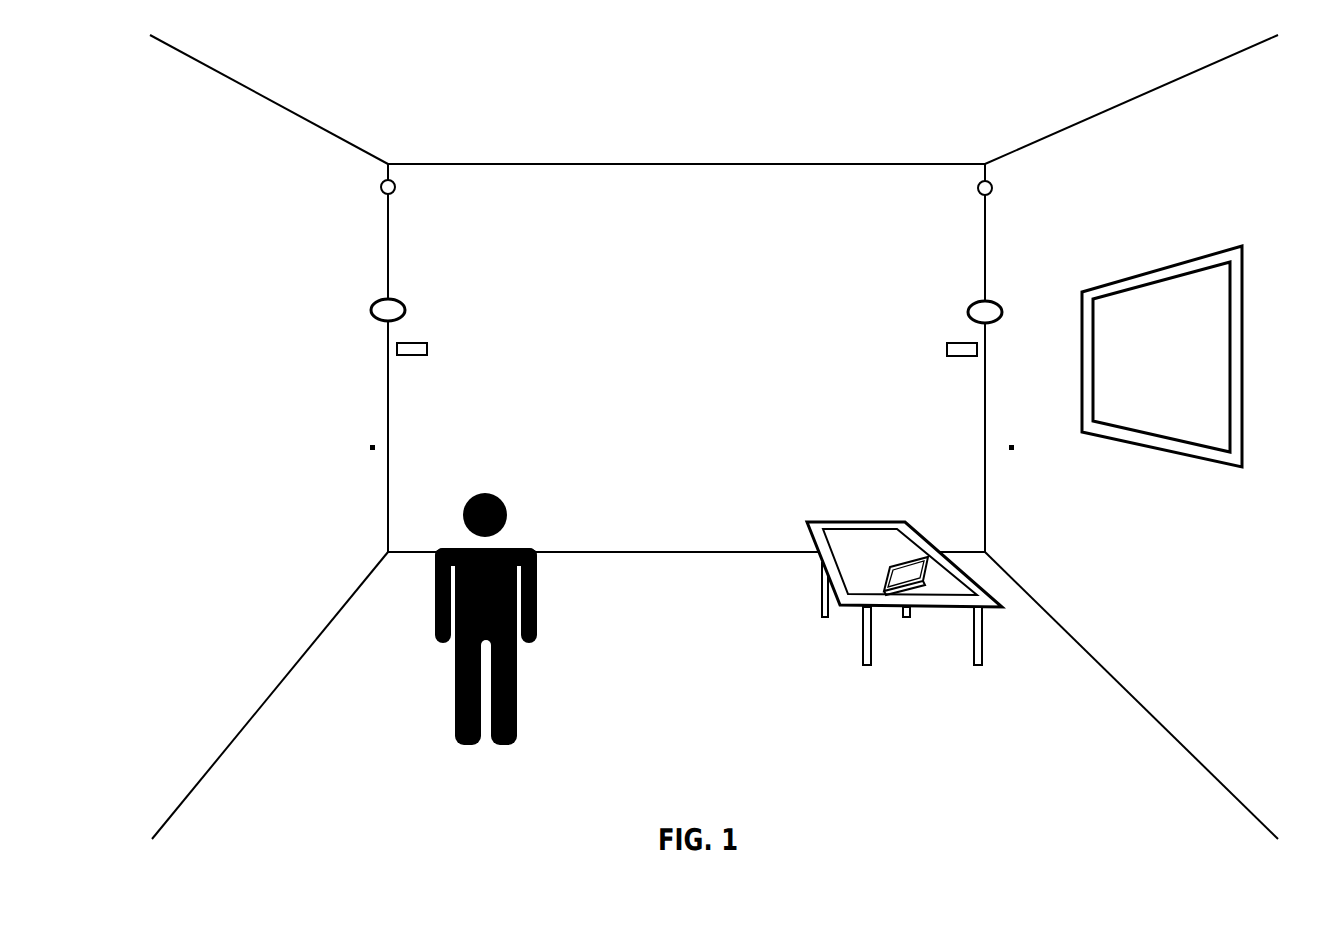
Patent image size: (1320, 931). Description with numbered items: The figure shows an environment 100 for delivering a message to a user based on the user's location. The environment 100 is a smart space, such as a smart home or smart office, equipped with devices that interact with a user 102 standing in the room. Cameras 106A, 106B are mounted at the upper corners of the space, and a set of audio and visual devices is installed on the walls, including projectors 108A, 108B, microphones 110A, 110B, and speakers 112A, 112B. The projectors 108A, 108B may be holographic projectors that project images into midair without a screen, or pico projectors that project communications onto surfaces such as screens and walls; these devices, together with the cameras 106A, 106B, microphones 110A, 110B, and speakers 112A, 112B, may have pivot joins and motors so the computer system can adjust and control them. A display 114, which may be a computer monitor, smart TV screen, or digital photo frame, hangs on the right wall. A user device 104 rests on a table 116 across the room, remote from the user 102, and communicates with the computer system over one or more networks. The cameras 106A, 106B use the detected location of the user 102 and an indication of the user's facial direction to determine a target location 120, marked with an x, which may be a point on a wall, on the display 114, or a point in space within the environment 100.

The environment 100 is at (404, 125).
The user 102 is at (496, 492).
The user device 104 is at (898, 565).
The camera 106A is at (394, 192).
The camera 106B is at (991, 193).
The projector 108A is at (403, 303).
The projector 108B is at (1001, 304).
The microphone 110A is at (390, 447).
The microphone 110B is at (999, 438).
The speaker 112A is at (421, 343).
The speaker 112B is at (945, 353).
The display 114 is at (1245, 349).
The table 116 is at (918, 534).
The target location 120 is at (644, 420).